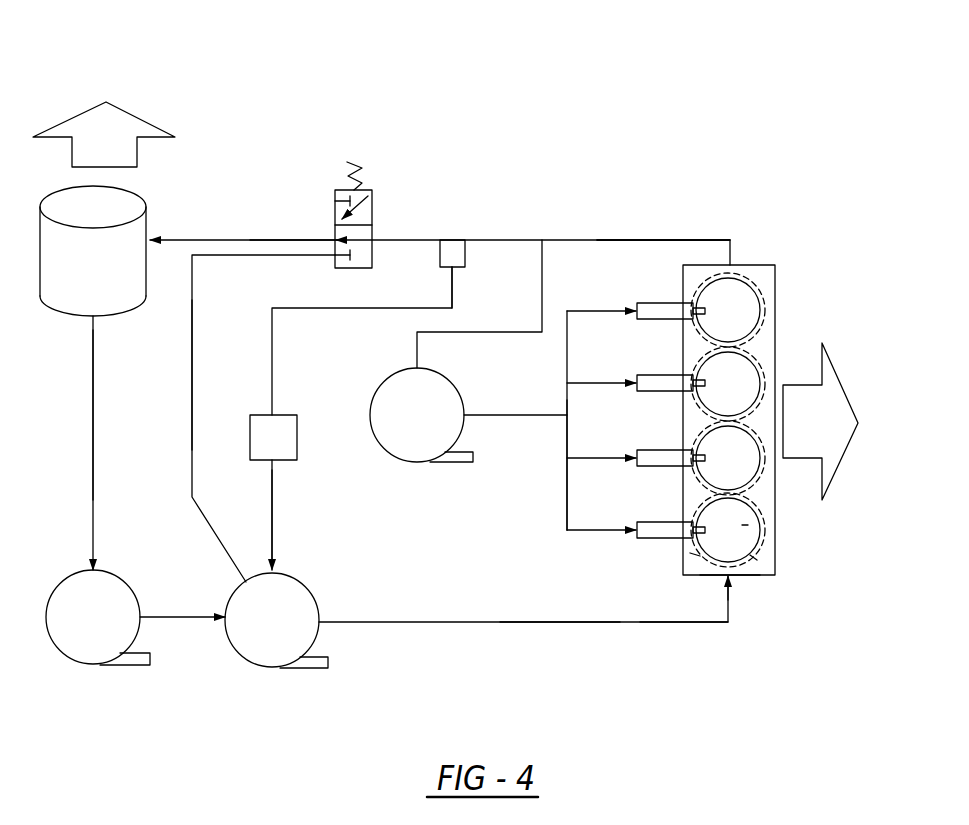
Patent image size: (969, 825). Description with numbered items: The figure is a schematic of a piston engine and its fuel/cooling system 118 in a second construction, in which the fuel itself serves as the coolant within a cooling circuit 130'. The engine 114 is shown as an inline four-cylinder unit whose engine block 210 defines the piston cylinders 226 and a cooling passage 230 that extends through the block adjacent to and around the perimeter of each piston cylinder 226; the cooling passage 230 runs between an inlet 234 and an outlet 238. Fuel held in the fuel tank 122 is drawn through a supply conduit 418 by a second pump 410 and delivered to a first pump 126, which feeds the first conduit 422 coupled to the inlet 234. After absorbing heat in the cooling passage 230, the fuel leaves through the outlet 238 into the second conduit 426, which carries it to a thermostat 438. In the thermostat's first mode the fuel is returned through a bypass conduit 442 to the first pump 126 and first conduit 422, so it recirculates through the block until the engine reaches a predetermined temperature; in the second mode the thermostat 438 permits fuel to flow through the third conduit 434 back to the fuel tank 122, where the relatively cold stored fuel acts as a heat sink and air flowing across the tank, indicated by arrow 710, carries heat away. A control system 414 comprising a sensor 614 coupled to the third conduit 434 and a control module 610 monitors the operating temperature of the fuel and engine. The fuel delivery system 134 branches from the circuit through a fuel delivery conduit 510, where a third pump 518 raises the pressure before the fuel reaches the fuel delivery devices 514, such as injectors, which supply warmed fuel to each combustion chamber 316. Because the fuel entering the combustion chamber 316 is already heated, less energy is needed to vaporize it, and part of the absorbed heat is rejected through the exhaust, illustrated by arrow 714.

The fuel/cooling system 118 is at (427, 98).
The arrow 710 is at (135, 118).
The fuel tank 122 is at (130, 313).
The third conduit 434 is at (255, 240).
The thermostat 438 is at (337, 192).
The second conduit 426 is at (597, 239).
The sensor 614 is at (465, 256).
The fuel delivery conduit 510 is at (470, 333).
The control module 610 is at (250, 432).
The bypass conduit 442 is at (192, 370).
The supply conduit 418 is at (93, 428).
The third pump 518 is at (395, 459).
The control system 414 is at (322, 460).
The fuel delivery system 134 is at (520, 508).
The engine 114 is at (780, 268).
The outlet 238 is at (732, 265).
The engine block 210 is at (775, 342).
The fuel delivery device 514 is at (658, 528).
The arrow 714 is at (847, 463).
The piston cylinder 226 is at (693, 553).
The combustion chamber 316 is at (742, 525).
The cooling passage 230 is at (757, 560).
The inlet 234 is at (730, 578).
The first conduit 422 is at (685, 622).
The cooling circuit 130' is at (574, 663).
The second pump 410 is at (78, 665).
The first pump 126 is at (262, 668).